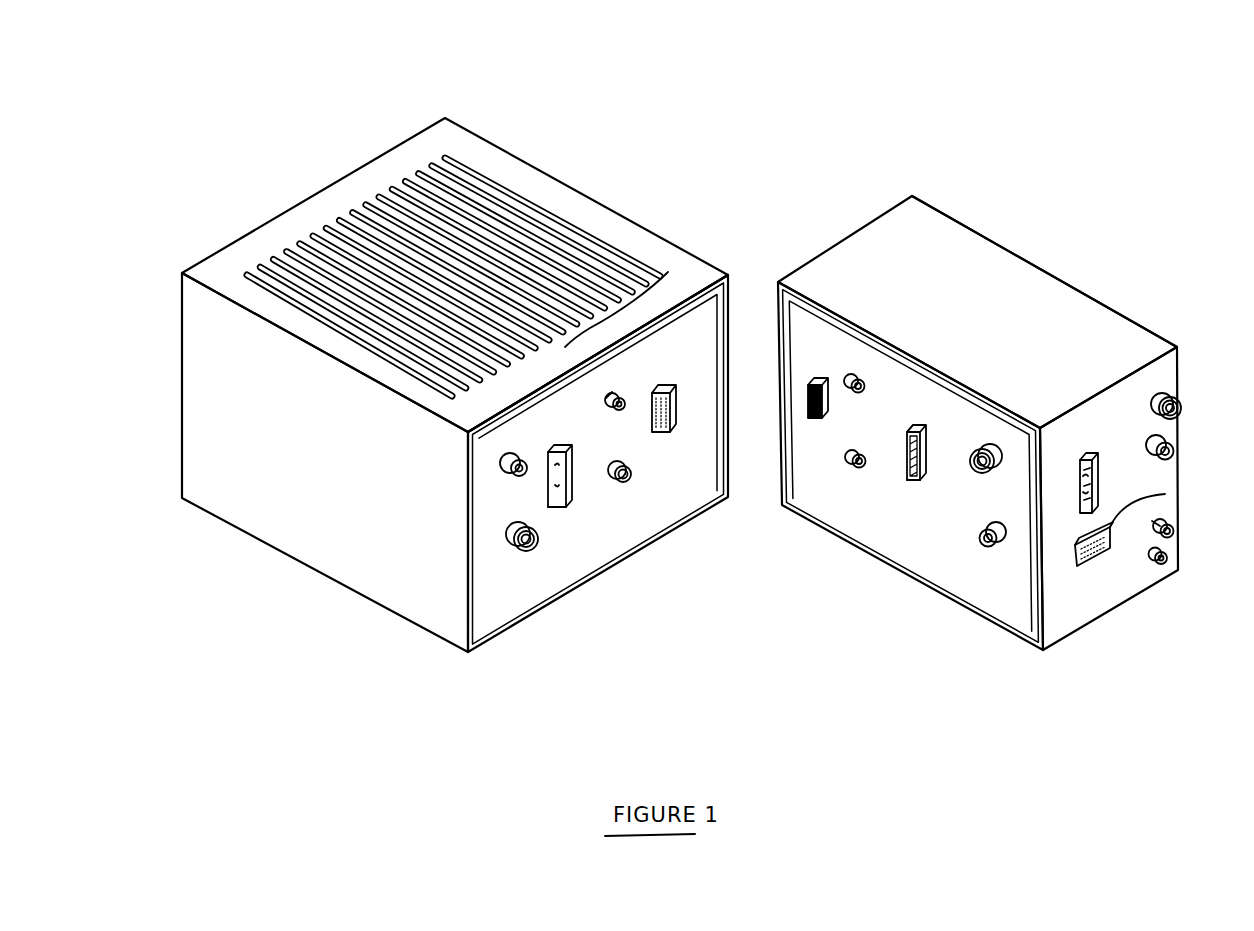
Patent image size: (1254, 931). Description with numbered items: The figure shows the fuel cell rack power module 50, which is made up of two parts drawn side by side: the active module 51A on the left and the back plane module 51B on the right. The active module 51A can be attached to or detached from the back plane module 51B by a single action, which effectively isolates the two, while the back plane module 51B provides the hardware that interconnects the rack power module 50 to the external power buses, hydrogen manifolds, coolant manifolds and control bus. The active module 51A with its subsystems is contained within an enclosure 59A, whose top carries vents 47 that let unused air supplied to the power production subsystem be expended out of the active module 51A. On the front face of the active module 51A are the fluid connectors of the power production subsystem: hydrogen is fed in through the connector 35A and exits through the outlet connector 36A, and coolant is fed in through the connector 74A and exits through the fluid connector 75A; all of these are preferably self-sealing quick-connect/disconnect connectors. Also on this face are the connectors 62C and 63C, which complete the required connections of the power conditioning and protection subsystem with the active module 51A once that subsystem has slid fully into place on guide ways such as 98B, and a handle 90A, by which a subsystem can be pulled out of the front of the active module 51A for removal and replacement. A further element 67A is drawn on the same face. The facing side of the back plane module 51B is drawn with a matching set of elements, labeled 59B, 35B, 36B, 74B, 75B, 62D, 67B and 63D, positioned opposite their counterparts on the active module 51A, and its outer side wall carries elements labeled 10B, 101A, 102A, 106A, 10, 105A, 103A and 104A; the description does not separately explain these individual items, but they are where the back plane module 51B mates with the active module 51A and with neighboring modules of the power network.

The rack power module 50 is at (1200, 360).
The active module 51A is at (478, 662).
The back plane module 51B is at (1193, 563).
The enclosure 59A is at (576, 208).
The top panel 59B is at (884, 230).
The vents 47 is at (450, 400).
The coolant connector 74A is at (513, 480).
The fluid connector 75A is at (524, 552).
The connector 62C is at (568, 470).
The switch 67A is at (550, 508).
The connector 63C is at (614, 414).
The hydrogen connector 35A is at (612, 412).
The outlet connector 36A is at (628, 480).
The handle 90A is at (660, 432).
The indicator light 35B is at (852, 385).
The indicator light 36B is at (855, 465).
The round connector 74B is at (980, 457).
The control knob 75B is at (990, 547).
The guide way 98B is at (823, 422).
The toggle switch 62D is at (908, 450).
The switch 67B is at (921, 480).
The indicator 63D is at (904, 447).
The second module 10B is at (1090, 457).
The round connector 101A is at (1180, 410).
The control knob 102A is at (1180, 455).
The switch position 106A is at (1093, 480).
The system 10 is at (1095, 484).
The toggle switch 105A is at (1095, 497).
The control knob 103A is at (1175, 530).
The control knob 104A is at (1180, 557).